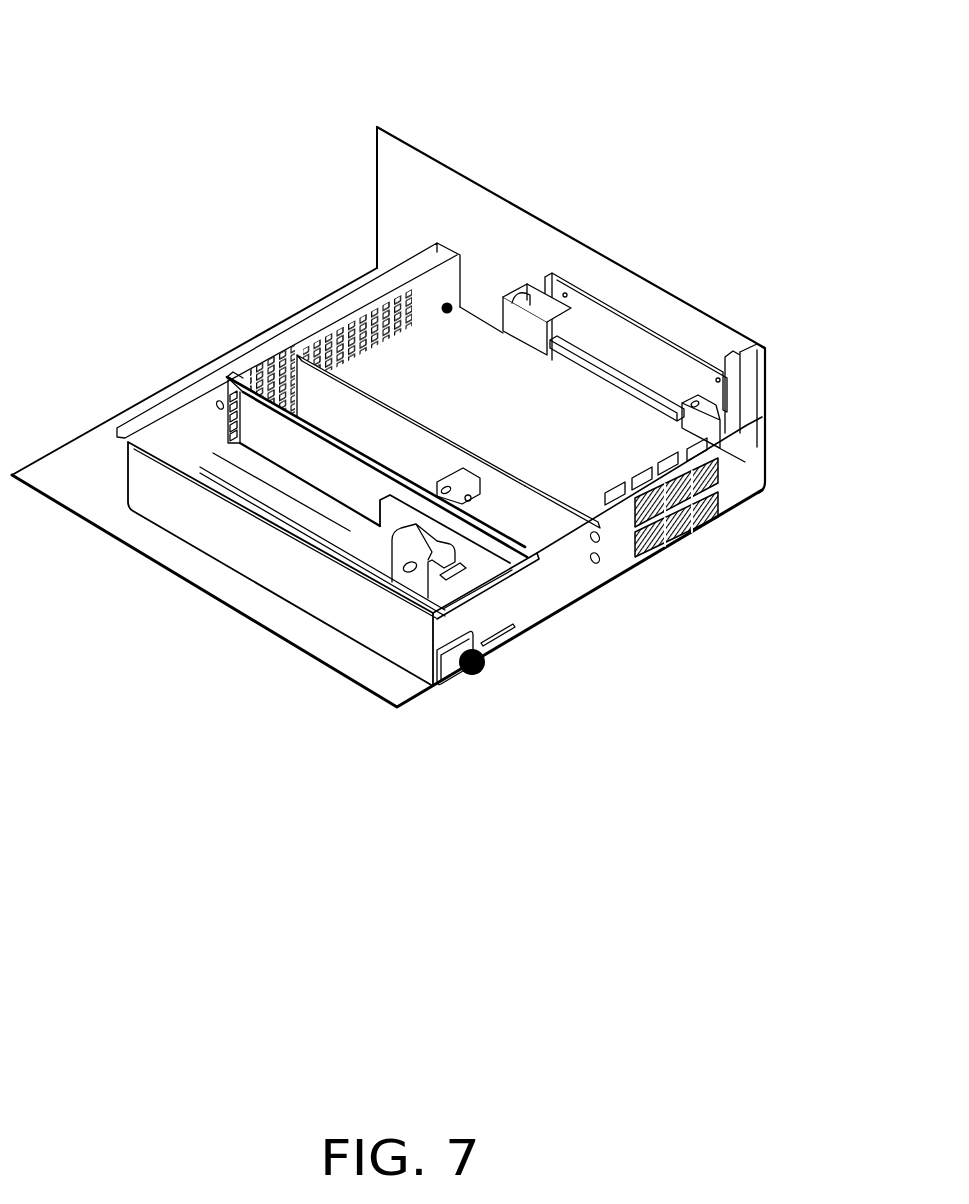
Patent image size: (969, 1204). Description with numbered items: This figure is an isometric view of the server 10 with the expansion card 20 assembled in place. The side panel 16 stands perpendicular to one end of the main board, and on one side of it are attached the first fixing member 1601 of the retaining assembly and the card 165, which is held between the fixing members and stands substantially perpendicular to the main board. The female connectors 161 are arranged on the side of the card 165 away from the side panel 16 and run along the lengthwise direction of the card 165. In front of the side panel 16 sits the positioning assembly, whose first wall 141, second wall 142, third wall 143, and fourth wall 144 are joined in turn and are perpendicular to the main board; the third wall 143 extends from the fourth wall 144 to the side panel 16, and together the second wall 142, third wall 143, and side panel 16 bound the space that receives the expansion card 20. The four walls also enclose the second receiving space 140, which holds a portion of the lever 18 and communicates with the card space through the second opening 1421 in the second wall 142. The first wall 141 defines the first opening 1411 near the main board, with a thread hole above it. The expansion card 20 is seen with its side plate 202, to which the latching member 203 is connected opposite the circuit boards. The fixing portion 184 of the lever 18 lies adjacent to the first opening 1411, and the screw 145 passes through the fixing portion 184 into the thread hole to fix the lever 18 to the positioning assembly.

The server 10 is at (238, 42).
The side panel 16 is at (418, 165).
The first fixing member 1601 is at (515, 327).
The female connectors 161 is at (597, 360).
The card 165 is at (653, 363).
The side plate 202 is at (340, 403).
The latching member 203 is at (540, 512).
The second wall 142 is at (240, 385).
The third wall 143 is at (183, 397).
The fourth wall 144 is at (157, 498).
The second receiving space 140 is at (305, 510).
The second opening 1421 is at (417, 580).
The lever 18 is at (395, 520).
The first wall 141 is at (510, 592).
The first opening 1411 is at (497, 645).
The fixing portion 184 is at (447, 677).
The screw 145 is at (470, 680).
The expansion card 20 is at (612, 557).